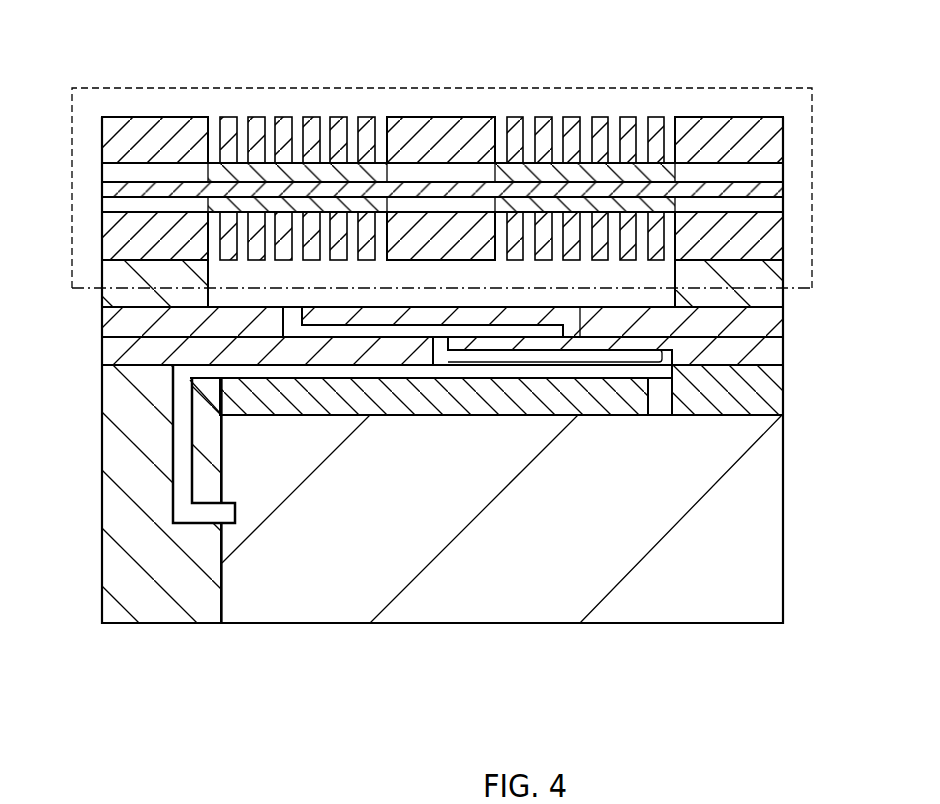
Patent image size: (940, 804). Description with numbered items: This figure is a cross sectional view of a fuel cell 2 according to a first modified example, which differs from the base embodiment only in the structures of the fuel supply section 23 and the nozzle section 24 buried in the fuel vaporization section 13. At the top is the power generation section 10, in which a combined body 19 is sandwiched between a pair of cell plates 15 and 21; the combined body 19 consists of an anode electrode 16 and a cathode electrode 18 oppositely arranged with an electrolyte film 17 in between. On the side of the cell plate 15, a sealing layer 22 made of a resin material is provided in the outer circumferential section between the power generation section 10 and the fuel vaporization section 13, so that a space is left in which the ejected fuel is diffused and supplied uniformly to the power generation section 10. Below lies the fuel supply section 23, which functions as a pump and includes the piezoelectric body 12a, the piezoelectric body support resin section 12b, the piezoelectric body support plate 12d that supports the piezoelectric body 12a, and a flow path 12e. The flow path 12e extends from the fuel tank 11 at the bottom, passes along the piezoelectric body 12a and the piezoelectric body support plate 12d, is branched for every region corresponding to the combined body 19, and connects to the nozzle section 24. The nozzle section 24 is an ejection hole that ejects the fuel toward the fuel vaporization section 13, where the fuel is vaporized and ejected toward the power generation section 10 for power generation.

The fuel cell 2 is at (797, 678).
The power generation section 10 is at (440, 88).
The fuel tank 11 is at (783, 498).
The piezoelectric body 12a is at (652, 398).
The piezoelectric body support resin section 12b is at (783, 380).
The piezoelectric body support plate 12d is at (783, 350).
The flow path 12e is at (180, 440).
The fuel vaporization section 13 is at (112, 314).
The cell plate 15 is at (758, 238).
The anode electrode 16 is at (110, 208).
The electrolyte film 17 is at (770, 190).
The cathode electrode 18 is at (105, 177).
The combined body 19 is at (882, 165).
The cell plate 21 is at (113, 140).
The sealing layer 22 is at (118, 268).
The fuel supply section 23 is at (898, 340).
The nozzle section 24 is at (110, 356).